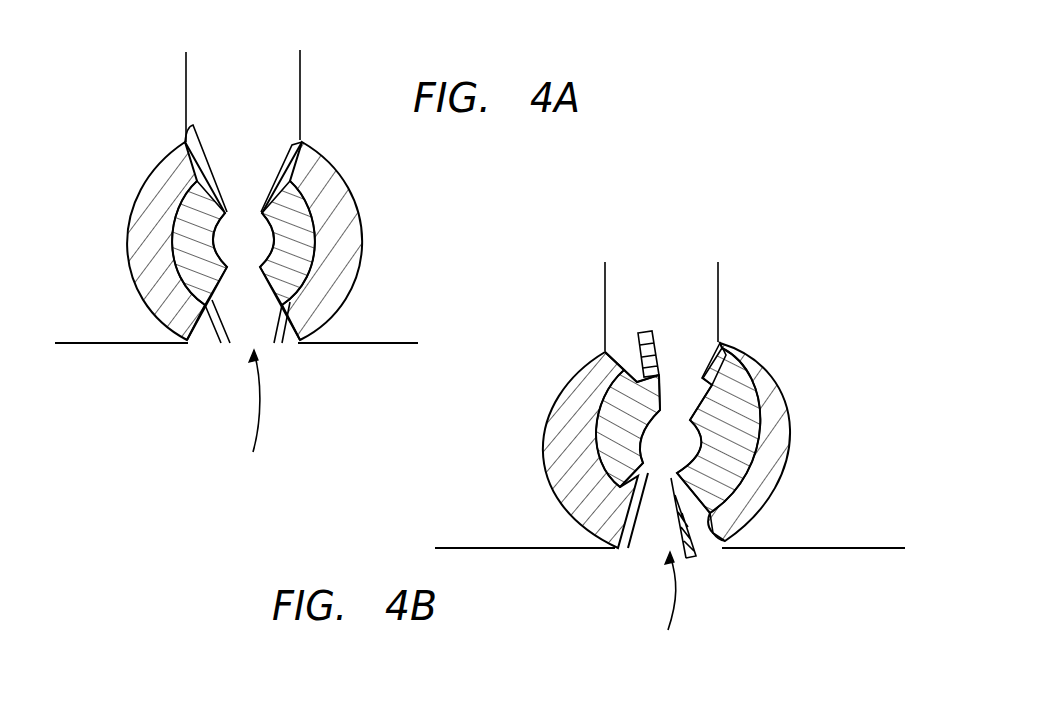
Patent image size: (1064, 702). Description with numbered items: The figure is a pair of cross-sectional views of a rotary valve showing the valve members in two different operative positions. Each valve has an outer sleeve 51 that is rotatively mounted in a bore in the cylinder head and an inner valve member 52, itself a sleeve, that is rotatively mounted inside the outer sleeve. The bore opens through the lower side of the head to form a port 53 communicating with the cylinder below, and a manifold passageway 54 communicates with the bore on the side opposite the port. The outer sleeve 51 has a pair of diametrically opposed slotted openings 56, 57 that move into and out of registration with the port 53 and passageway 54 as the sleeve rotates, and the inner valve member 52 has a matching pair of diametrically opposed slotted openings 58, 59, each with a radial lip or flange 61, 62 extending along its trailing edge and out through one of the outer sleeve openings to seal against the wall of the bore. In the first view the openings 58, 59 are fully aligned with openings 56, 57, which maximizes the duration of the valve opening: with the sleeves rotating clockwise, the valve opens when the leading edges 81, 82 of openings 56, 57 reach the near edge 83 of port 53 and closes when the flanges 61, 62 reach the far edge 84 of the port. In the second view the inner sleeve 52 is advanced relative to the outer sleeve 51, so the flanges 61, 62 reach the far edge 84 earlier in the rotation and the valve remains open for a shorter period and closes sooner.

In FIG. 4A, the outer sleeve 51 is at (343, 216).
In FIG. 4B, the outer sleeve 51 is at (766, 428).
In FIG. 4A, the inner valve member 52 is at (176, 232).
In FIG. 4B, the inner valve member 52 is at (610, 438).
In FIG. 4A, the port 53 is at (247, 418).
In FIG. 4B, the port 53 is at (661, 609).
In FIG. 4A, the manifold passageway 54 is at (187, 74).
In FIG. 4B, the manifold passageway 54 is at (717, 262).
In FIG. 4A, the slotted opening 56 is at (222, 340).
In FIG. 4B, the slotted opening 56 is at (728, 543).
In FIG. 4A, the slotted opening 57 is at (288, 150).
In FIG. 4B, the slotted opening 57 is at (605, 351).
In FIG. 4A, the slotted opening 58 is at (214, 278).
In FIG. 4B, the slotted opening 58 is at (622, 478).
In FIG. 4A, the slotted opening 59 is at (268, 185).
In FIG. 4B, the slotted opening 59 is at (722, 389).
In FIG. 4A, the radial lip or flange 61 is at (284, 342).
In FIG. 4B, the radial lip or flange 61 is at (693, 558).
In FIG. 4A, the radial lip or flange 62 is at (188, 135).
In FIG. 4B, the radial lip or flange 62 is at (645, 332).
In FIG. 4A, the leading edge 81 is at (203, 342).
In FIG. 4B, the leading edge 81 is at (628, 547).
In FIG. 4A, the leading edge 82 is at (300, 140).
In FIG. 4B, the leading edge 82 is at (718, 342).
In FIG. 4A, the near edge 83 is at (298, 345).
In FIG. 4B, the near edge 83 is at (724, 544).
In FIG. 4A, the far edge 84 is at (191, 342).
In FIG. 4B, the far edge 84 is at (616, 548).